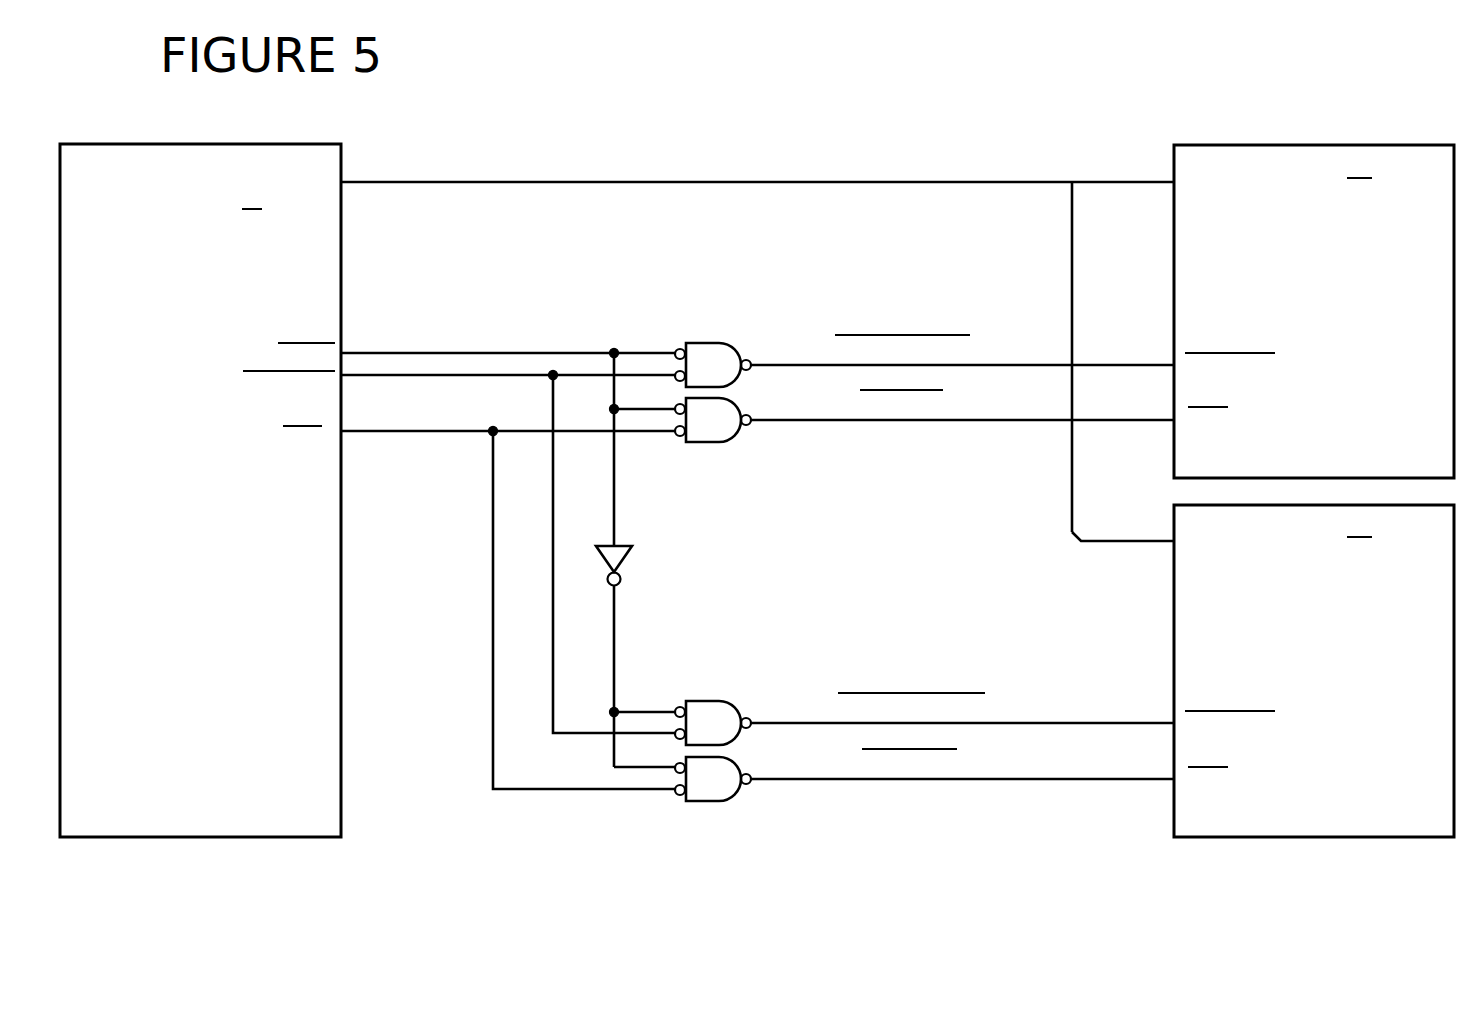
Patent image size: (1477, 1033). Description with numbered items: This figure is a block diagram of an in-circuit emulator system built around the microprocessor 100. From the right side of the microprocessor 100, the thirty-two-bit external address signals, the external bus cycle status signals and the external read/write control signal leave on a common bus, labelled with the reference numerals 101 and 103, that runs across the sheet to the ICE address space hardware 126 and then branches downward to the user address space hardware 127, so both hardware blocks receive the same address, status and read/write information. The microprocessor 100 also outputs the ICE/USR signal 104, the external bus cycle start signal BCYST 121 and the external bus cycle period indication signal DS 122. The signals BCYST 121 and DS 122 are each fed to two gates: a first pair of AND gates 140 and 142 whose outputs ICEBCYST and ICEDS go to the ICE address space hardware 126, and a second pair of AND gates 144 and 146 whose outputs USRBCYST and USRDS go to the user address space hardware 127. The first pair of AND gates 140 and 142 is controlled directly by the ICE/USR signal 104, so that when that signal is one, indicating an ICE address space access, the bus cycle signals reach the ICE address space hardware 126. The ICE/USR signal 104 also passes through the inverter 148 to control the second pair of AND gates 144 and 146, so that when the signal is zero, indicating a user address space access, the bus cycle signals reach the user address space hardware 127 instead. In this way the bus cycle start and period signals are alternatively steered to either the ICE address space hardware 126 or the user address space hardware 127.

The microprocessor 100 is at (203, 838).
The address bus A31-0 101 is at (420, 182).
The read/write control line 103 is at (1123, 536).
The ICE/USR signal 104 is at (412, 352).
The external bus cycle start signal BCYST 121 is at (412, 377).
The external bus cycle period indication signal DS 122 is at (412, 433).
The ICE address space hardware 126 is at (1300, 145).
The user address space hardware 127 is at (1320, 838).
The AND gate 140 is at (710, 343).
The AND gate 142 is at (710, 442).
The AND gate 144 is at (710, 701).
The AND gate 146 is at (710, 801).
The inverter 148 is at (625, 565).